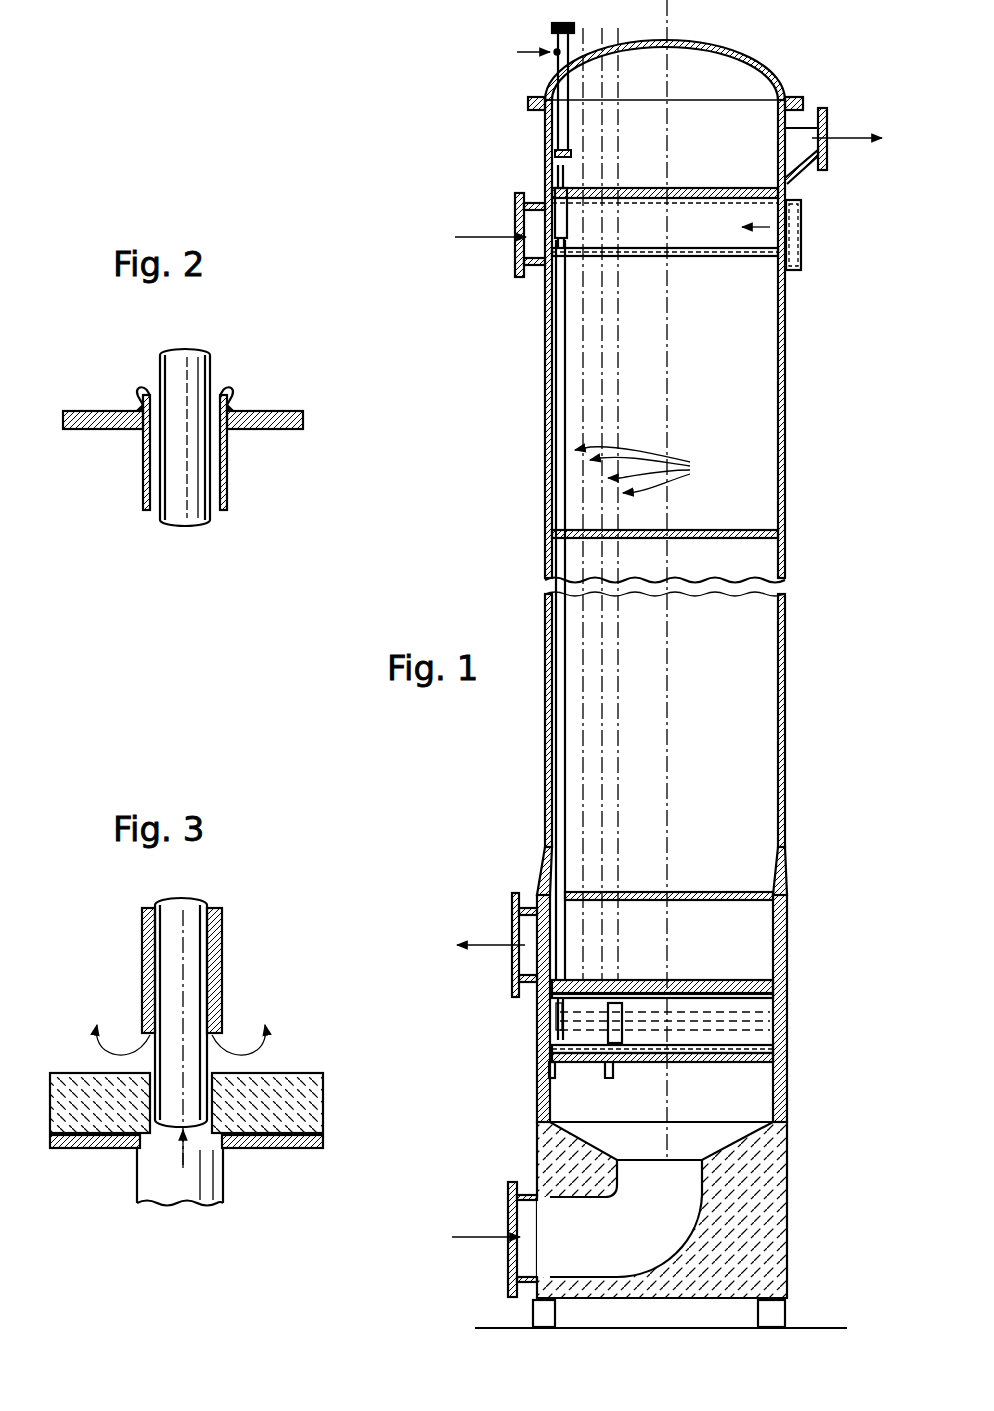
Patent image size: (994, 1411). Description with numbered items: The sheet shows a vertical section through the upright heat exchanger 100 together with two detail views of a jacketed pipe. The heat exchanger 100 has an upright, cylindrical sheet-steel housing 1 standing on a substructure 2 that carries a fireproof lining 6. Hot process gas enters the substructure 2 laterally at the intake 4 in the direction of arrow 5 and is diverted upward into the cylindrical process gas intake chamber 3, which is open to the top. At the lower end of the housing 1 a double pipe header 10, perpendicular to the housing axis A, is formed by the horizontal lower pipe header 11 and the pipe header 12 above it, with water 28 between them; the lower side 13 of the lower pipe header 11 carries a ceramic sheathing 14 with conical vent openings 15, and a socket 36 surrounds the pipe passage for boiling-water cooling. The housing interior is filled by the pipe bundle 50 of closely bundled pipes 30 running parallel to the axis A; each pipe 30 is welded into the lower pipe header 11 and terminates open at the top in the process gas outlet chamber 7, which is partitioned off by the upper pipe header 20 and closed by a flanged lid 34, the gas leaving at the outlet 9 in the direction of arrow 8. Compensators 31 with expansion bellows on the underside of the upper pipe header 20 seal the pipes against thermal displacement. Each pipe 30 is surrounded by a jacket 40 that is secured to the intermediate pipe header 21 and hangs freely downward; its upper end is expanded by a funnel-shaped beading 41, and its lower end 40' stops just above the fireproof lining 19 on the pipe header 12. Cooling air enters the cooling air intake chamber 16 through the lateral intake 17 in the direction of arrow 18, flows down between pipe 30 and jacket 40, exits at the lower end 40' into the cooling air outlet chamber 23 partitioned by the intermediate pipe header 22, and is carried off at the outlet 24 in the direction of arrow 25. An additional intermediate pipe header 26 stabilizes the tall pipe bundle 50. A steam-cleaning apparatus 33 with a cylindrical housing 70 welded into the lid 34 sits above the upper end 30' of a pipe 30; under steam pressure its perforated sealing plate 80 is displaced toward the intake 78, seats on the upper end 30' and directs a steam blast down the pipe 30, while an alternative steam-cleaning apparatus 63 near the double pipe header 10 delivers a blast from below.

In FIG. 1, the housing 1 is at (790, 652).
In FIG. 1, the substructure 2 is at (790, 1196).
In FIG. 1, the process gas intake chamber 3 is at (756, 1116).
In FIG. 1, the intake 4 is at (508, 1207).
In FIG. 1, the arrow 5 is at (480, 1237).
In FIG. 1, the fireproof lining 6 is at (766, 1242).
In FIG. 1, the process gas outlet chamber 7 is at (718, 77).
In FIG. 1, the arrow 8 is at (844, 134).
In FIG. 1, the outlet 9 is at (806, 114).
In FIG. 1, the double pipe header 10 is at (828, 990).
In FIG. 1, the lower pipe header 11 is at (756, 1043).
In FIG. 1, the pipe header 12 is at (748, 997).
In FIG. 3, the pipe header 12 is at (310, 1141).
In FIG. 1, the lower side 13 is at (682, 1063).
In FIG. 3, the lower side 13 is at (180, 1168).
In FIG. 1, the ceramic sheathing 14 is at (742, 1068).
In FIG. 1, the conical vent opening 15 is at (557, 1062).
In FIG. 1, the cooling air intake chamber 16 is at (685, 237).
In FIG. 1, the lateral intake 17 is at (516, 254).
In FIG. 1, the arrow 18 is at (474, 237).
In FIG. 1, the fireproof lining 19 is at (745, 978).
In FIG. 3, the fireproof lining 19 is at (293, 1102).
In FIG. 1, the upper pipe header 20 is at (728, 198).
In FIG. 1, the intermediate pipe header 21 is at (750, 258).
In FIG. 2, the intermediate pipe header 21 is at (306, 418).
In FIG. 1, the intermediate pipe header 22 is at (742, 893).
In FIG. 1, the cooling air outlet chamber 23 is at (758, 928).
In FIG. 1, the outlet 24 is at (517, 967).
In FIG. 1, the arrow 25 is at (491, 942).
In FIG. 1, the additional intermediate pipe header 26 is at (754, 530).
In FIG. 1, the water 28 is at (682, 1027).
In FIG. 1, the pipe 30 is at (556, 602).
In FIG. 2, the pipe 30 is at (227, 437).
In FIG. 3, the pipe 30 is at (219, 1031).
In FIG. 1, the upper end 30' is at (514, 156).
In FIG. 1, the compensator 31 is at (568, 221).
In FIG. 1, the steam-cleaning apparatus 33 is at (574, 136).
In FIG. 1, the flanged lid 34 is at (758, 64).
In FIG. 1, the socket 36 is at (550, 1028).
In FIG. 1, the jacket 40 is at (607, 610).
In FIG. 2, the jacket 40 is at (218, 452).
In FIG. 3, the jacket 40 is at (213, 970).
In FIG. 1, the lower end 40' is at (607, 941).
In FIG. 3, the lower end 40' is at (178, 1006).
In FIG. 2, the beading 41 is at (232, 393).
In FIG. 1, the pipe bundle 50 is at (642, 470).
In FIG. 1, the steam-cleaning apparatus 63 is at (617, 1080).
In FIG. 1, the cylindrical housing 70 is at (567, 84).
In FIG. 1, the intake 78 is at (522, 52).
In FIG. 1, the sealing plate 80 is at (570, 160).
In FIG. 1, the heat exchanger 100 is at (488, 465).
In FIG. 1, the housing axis A is at (672, 26).